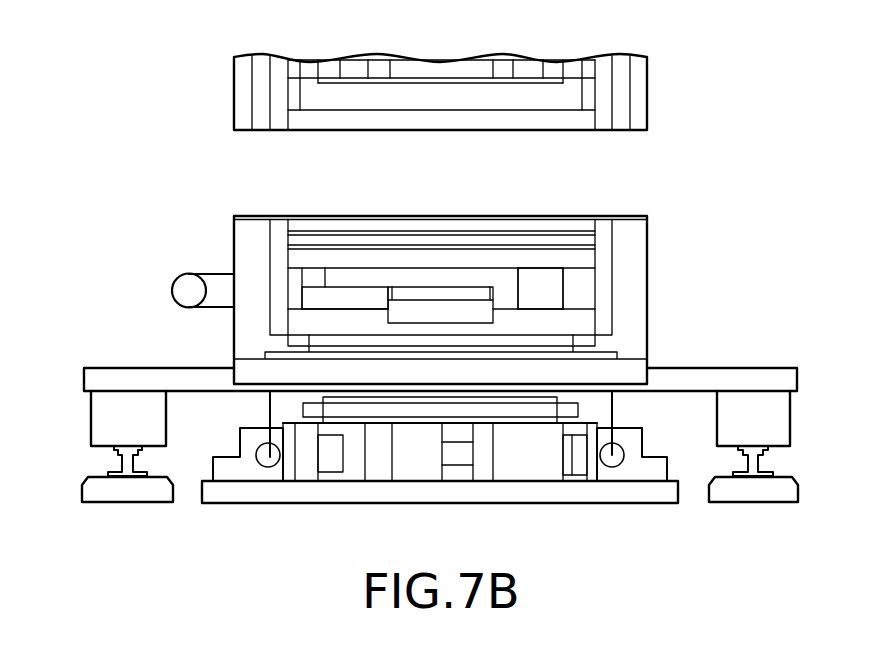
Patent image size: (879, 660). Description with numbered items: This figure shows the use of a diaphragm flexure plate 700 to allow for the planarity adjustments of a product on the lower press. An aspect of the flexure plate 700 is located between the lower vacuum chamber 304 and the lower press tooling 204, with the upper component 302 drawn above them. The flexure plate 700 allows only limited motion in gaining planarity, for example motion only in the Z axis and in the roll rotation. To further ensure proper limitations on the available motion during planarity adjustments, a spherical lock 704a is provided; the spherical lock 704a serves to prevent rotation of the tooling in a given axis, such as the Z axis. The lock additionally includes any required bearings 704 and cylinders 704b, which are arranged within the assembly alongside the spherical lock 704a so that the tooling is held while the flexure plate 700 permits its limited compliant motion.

The upper fixture / top plate assembly 302 is at (647, 93).
The lower press tooling 204 is at (140, 215).
The lower vacuum chamber 304 is at (647, 287).
The bearings 704 is at (575, 289).
The spherical lock 704a is at (412, 298).
The cylinders 704b is at (326, 298).
The diaphragm flexure plate 700 is at (450, 402).